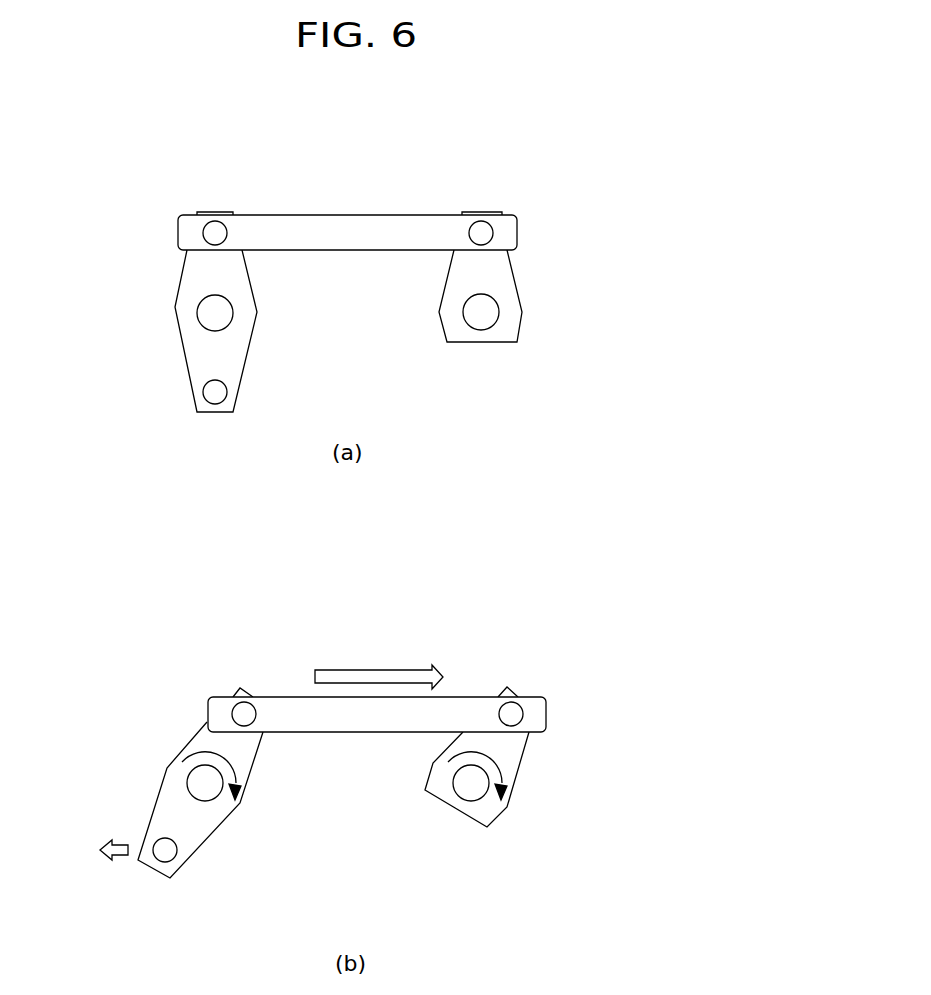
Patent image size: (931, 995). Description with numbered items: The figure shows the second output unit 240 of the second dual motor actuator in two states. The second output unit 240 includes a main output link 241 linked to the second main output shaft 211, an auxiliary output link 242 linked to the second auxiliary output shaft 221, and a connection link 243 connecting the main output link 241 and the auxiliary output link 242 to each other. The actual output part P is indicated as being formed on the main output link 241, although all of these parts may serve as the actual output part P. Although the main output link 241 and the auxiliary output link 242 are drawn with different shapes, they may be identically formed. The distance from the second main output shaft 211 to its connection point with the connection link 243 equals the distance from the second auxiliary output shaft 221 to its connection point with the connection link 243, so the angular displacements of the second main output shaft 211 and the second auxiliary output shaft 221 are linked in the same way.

The second output unit 240 is at (343, 505).
The connection link 243 is at (347, 222).
The main output link 241 is at (177, 564).
The auxiliary output link 242 is at (497, 533).
The second main output shaft 211 is at (197, 313).
The second auxiliary output shaft 221 is at (490, 312).
The actual output part P is at (203, 392).